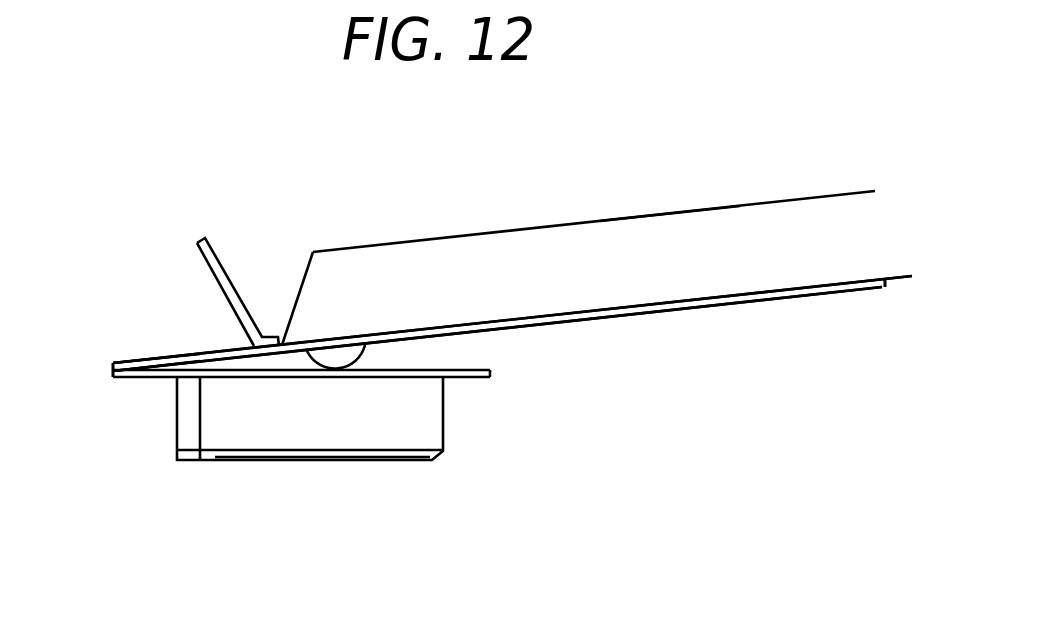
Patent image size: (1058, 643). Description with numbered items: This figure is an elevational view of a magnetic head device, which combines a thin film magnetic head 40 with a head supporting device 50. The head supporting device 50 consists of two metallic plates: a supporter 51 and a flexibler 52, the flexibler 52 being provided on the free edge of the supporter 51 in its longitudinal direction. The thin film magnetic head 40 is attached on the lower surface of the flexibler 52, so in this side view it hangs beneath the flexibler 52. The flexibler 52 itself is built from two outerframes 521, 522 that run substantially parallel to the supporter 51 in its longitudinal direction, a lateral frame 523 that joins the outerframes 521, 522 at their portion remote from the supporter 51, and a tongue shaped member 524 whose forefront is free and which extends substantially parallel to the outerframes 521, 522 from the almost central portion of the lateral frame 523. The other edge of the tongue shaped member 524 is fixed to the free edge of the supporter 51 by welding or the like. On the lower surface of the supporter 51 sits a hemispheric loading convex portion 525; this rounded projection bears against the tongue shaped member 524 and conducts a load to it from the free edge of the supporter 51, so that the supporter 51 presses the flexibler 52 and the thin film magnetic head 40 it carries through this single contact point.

The thin film magnetic head 40 is at (206, 474).
The head supporting device 50 is at (473, 226).
The supporter 51 is at (652, 232).
The flexibler 52 is at (116, 386).
The outerframe 521 is at (487, 320).
The outerframe 522 is at (183, 356).
The lateral frame 523 is at (137, 361).
The tongue shaped member 524 is at (460, 370).
The hemispheric loading convex portion 525 is at (336, 358).